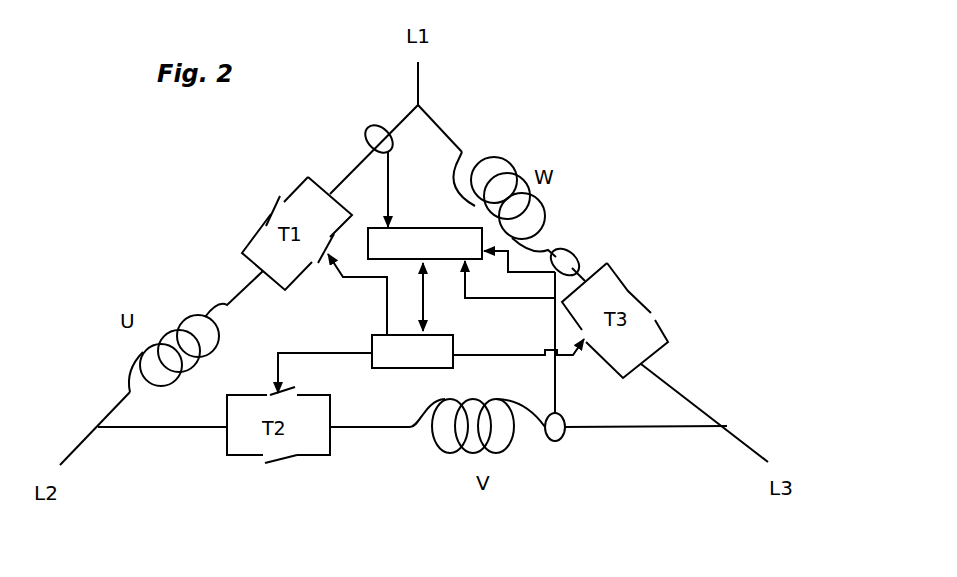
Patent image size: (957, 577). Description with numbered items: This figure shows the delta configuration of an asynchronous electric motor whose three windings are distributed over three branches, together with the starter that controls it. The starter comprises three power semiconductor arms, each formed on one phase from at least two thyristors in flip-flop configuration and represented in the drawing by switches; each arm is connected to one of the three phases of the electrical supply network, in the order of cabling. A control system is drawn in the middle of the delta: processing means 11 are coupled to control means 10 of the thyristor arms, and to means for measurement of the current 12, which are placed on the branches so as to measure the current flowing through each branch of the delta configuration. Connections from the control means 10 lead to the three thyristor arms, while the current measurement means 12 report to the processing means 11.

The control means 10 is at (412, 351).
The processing means 11 is at (425, 243).
The means for measurement of the current 12 is at (367, 124).